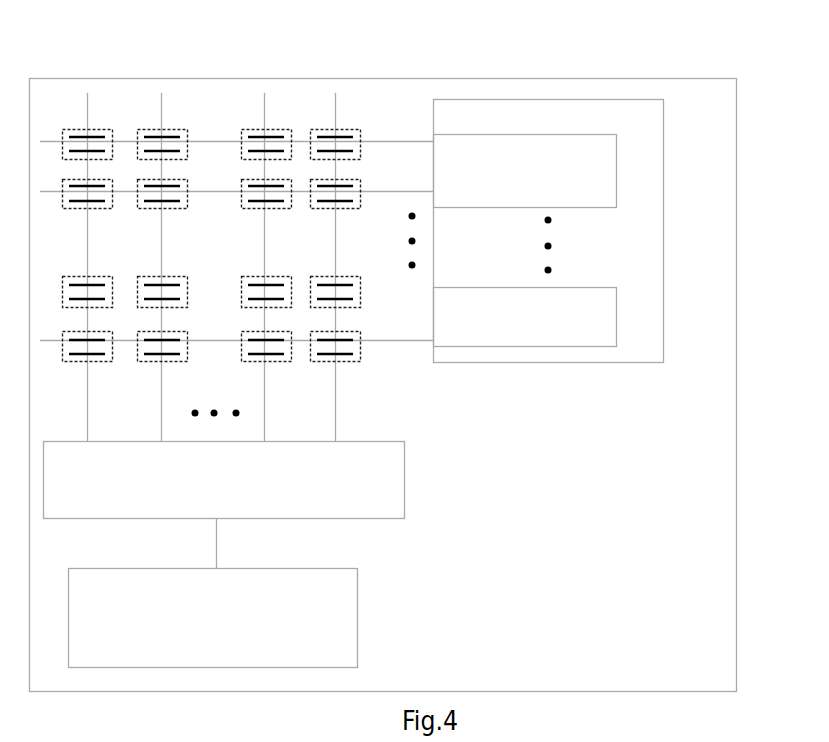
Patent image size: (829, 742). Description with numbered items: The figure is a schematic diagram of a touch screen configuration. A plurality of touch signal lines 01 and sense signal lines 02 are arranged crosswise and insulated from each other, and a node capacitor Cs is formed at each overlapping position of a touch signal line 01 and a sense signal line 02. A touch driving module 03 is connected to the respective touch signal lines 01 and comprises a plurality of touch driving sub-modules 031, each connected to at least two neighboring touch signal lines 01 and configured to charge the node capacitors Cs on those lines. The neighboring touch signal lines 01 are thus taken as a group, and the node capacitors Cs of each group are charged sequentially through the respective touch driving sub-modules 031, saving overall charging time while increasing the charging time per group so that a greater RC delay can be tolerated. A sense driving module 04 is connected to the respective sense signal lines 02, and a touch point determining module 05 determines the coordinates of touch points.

The node capacitor Cs is at (180, 128).
The touch signal lines 01 is at (397, 140).
The sense signal lines 02 is at (335, 385).
The touch driving module 03 is at (527, 99).
The touch driving sub-modules 031 is at (587, 207).
The sense driving module 04 is at (404, 518).
The touch point determining module 05 is at (358, 618).